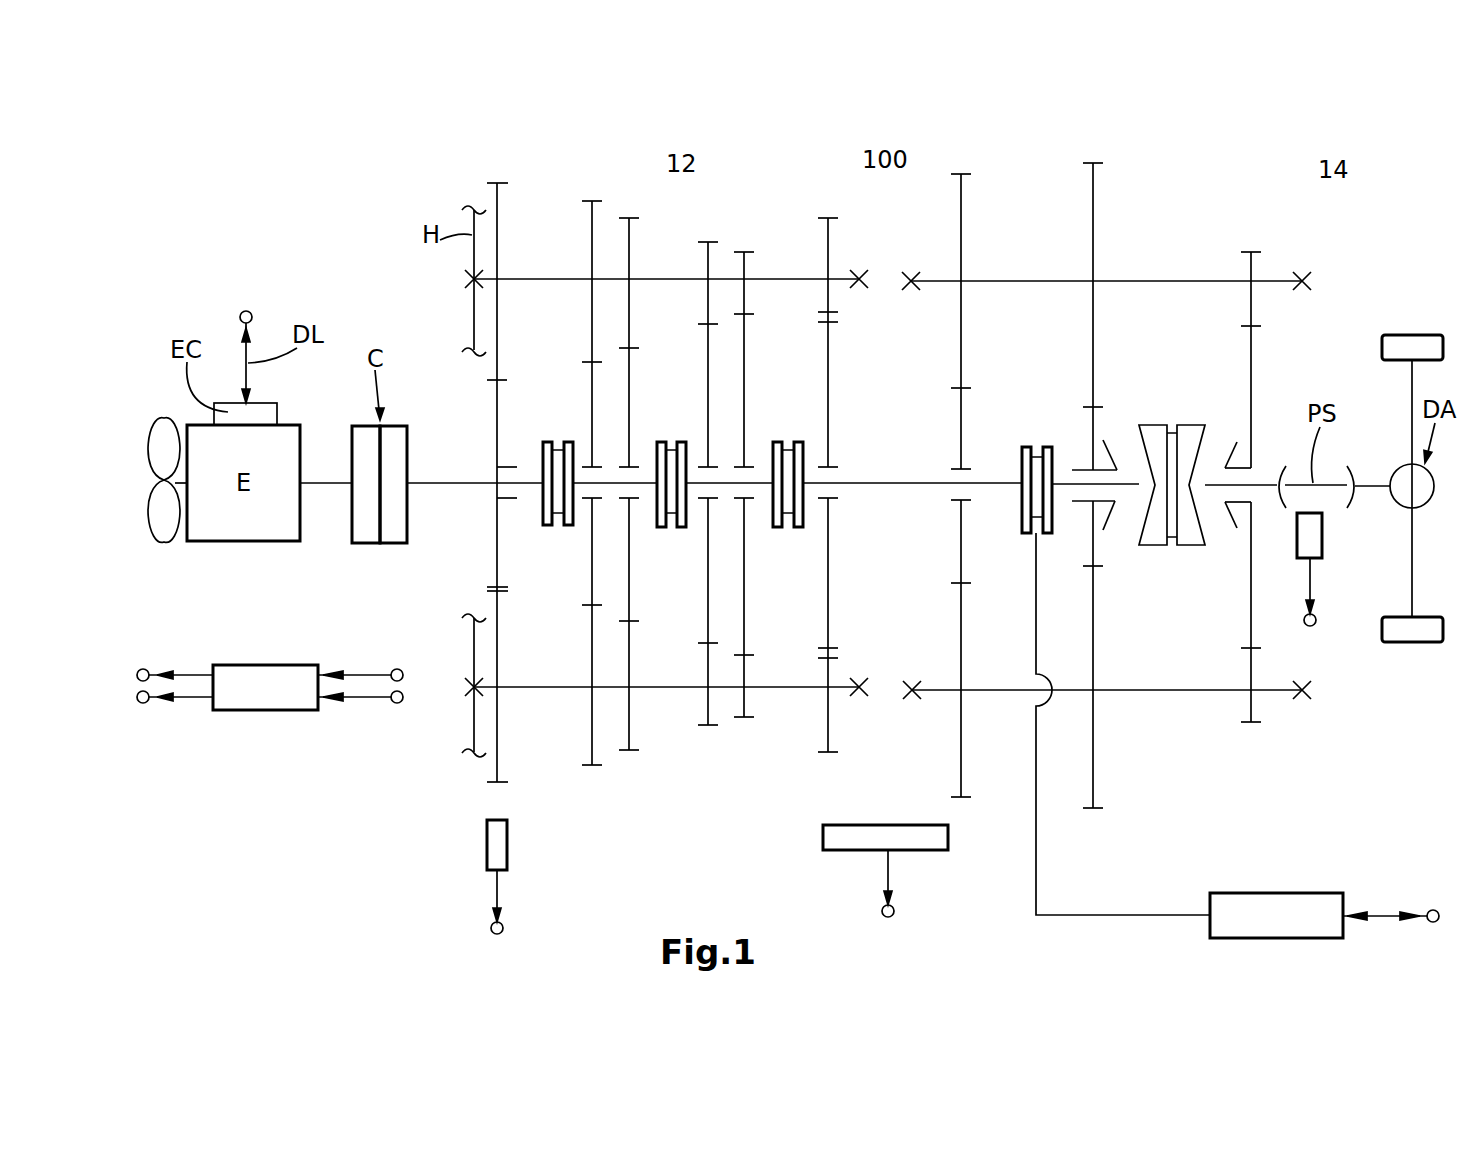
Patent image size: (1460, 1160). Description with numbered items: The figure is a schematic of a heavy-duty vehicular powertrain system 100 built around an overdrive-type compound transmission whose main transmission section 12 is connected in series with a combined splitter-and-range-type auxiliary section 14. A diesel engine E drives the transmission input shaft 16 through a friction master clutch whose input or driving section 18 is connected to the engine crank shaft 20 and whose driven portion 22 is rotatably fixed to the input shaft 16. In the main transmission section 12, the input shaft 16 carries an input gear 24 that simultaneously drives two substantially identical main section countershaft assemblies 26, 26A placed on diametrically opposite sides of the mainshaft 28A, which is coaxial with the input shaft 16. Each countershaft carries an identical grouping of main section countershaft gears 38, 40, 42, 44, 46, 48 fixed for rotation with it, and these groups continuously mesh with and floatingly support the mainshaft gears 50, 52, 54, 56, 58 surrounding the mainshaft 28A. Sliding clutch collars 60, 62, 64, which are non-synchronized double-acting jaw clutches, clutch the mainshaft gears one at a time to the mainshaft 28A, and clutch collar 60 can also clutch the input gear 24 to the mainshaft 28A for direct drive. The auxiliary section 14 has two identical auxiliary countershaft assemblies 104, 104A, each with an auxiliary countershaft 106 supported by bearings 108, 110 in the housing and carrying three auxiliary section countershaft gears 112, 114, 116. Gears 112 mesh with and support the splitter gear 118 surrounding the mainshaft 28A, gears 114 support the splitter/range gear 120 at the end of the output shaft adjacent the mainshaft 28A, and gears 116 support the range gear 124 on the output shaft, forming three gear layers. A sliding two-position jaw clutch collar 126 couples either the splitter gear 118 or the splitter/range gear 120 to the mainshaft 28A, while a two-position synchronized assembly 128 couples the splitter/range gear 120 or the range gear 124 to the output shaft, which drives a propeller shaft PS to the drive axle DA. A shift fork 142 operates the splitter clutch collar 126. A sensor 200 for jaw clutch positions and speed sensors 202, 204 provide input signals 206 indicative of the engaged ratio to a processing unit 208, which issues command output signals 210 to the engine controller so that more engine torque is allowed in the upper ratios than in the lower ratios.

The main transmission section 12 is at (678, 218).
The auxiliary section 14 is at (1301, 214).
The input shaft 16 is at (456, 482).
The input or driving section 18 is at (367, 525).
The engine crank shaft 20 is at (327, 483).
The driven portion 22 is at (397, 527).
The input gear 24 is at (497, 533).
The main section countershaft assembly 26 is at (783, 278).
The main section countershaft assembly 26A is at (520, 687).
The mainshaft 28A is at (893, 490).
The main section countershaft gear 38 is at (498, 748).
The main section countershaft gear 40 is at (592, 732).
The main section countershaft gear 42 is at (630, 727).
The main section countershaft gear 44 is at (708, 708).
The main section countershaft gear 46 is at (745, 702).
The main section countershaft gear 48 is at (828, 735).
The mainshaft gear 50 is at (592, 413).
The mainshaft gear 52 is at (630, 400).
The mainshaft gear 54 is at (707, 432).
The mainshaft gear 56 is at (747, 385).
The mainshaft gear 58 is at (827, 372).
The sliding clutch collar 60 is at (557, 525).
The sliding clutch collar 62 is at (672, 527).
The sliding clutch collar 64 is at (787, 527).
The vehicular powertrain system 100 is at (873, 214).
The auxiliary countershaft assembly 104 is at (1164, 270).
The auxiliary countershaft assembly 104A is at (1300, 755).
The auxiliary countershaft 106 is at (993, 280).
The bearing 108 is at (908, 277).
The bearing 110 is at (1307, 280).
The auxiliary section countershaft gear 112 is at (962, 237).
The auxiliary section countershaft gear 114 is at (1093, 218).
The auxiliary section countershaft gear 116 is at (1250, 263).
The auxiliary section splitter gear 118 is at (960, 435).
The auxiliary section splitter/range gear 120 is at (1092, 427).
The auxiliary section range gear 124 is at (1252, 400).
The sliding two-position jaw clutch collar 126 is at (1038, 447).
The two-position synchronized assembly 128 is at (1180, 437).
The shift fork 142 is at (1035, 861).
The sensor 200 is at (915, 842).
The speed sensor 202 is at (507, 848).
The speed sensor 204 is at (1322, 533).
The input signals 206 is at (389, 723).
The processing unit 208 is at (278, 690).
The command output signals 210 is at (190, 724).